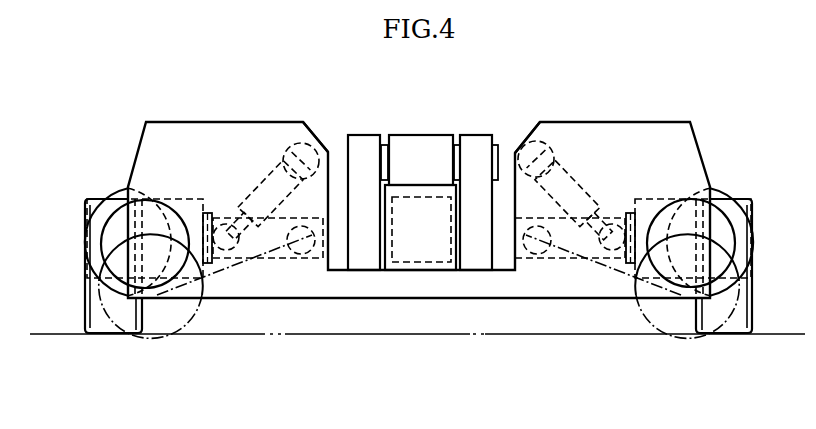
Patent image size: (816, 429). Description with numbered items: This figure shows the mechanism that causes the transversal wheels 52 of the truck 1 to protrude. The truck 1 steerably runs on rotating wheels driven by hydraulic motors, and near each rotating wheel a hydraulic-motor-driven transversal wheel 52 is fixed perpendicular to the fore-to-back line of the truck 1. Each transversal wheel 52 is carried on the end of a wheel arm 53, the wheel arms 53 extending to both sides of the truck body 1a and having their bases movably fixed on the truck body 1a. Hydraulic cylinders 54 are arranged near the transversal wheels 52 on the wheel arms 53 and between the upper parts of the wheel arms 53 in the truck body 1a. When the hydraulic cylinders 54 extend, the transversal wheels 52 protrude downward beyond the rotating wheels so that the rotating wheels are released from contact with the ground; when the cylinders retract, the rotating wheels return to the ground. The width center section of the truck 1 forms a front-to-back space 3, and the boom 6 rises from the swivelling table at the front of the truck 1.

The truck 1 is at (648, 110).
The truck body 1a is at (328, 152).
The space 3 is at (514, 152).
The boom 6 is at (413, 133).
The transversal wheels 52 is at (155, 188).
The wheel arms 53 is at (290, 262).
The hydraulic cylinders 54 is at (272, 165).